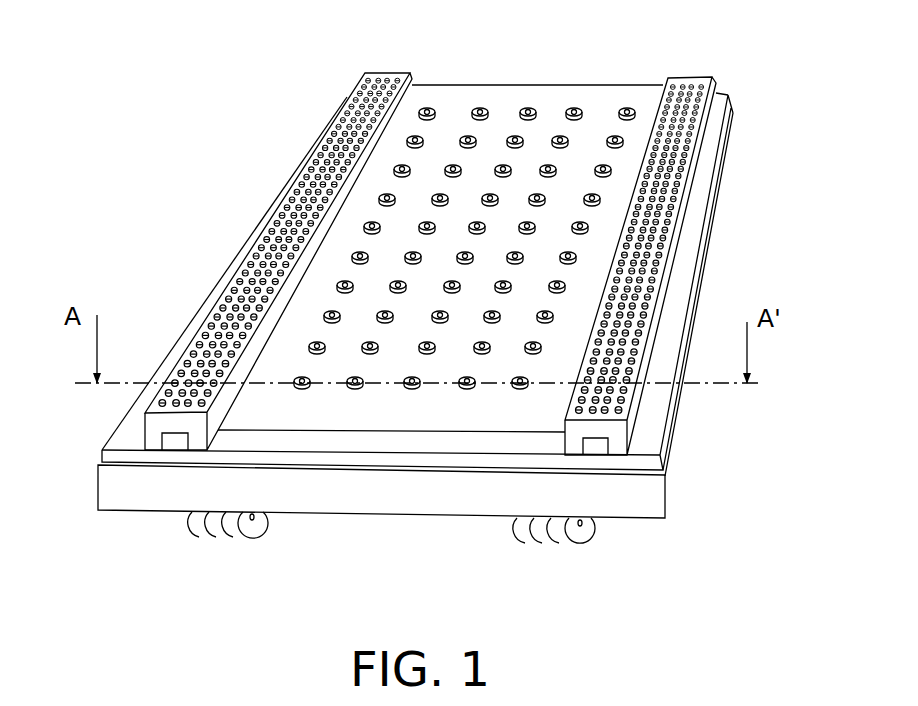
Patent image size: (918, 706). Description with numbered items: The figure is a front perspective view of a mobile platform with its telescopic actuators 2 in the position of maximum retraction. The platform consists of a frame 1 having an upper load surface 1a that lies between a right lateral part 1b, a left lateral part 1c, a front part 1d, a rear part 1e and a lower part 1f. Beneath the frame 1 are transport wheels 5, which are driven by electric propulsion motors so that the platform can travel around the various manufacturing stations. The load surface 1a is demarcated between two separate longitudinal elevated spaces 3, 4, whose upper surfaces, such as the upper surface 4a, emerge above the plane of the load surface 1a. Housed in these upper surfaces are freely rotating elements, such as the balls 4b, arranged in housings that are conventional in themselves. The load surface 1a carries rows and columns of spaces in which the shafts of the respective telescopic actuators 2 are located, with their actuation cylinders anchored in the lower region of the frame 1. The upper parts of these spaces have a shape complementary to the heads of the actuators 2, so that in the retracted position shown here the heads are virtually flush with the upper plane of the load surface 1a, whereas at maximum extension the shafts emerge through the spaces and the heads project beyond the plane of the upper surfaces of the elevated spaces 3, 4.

The frame 1 is at (454, 300).
The upper load surface 1a is at (292, 328).
The right lateral part 1b is at (235, 258).
The left lateral part 1c is at (717, 223).
The front part 1d is at (335, 497).
The rear part 1e is at (480, 88).
The lower part 1f is at (463, 517).
The telescopic actuators 2 is at (615, 115).
The longitudinal elevated space 3 is at (380, 72).
The longitudinal elevated space 4 is at (445, 233).
The upper surface of elevated space 4a is at (278, 231).
The freely rotating elements 4b is at (663, 103).
The transport wheels 5 is at (218, 518).